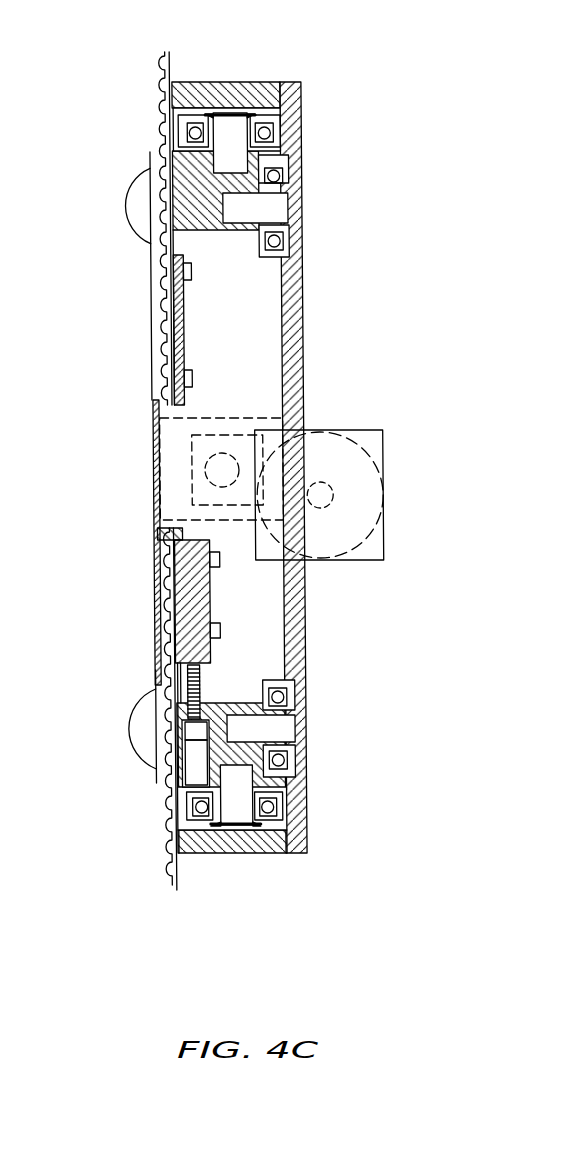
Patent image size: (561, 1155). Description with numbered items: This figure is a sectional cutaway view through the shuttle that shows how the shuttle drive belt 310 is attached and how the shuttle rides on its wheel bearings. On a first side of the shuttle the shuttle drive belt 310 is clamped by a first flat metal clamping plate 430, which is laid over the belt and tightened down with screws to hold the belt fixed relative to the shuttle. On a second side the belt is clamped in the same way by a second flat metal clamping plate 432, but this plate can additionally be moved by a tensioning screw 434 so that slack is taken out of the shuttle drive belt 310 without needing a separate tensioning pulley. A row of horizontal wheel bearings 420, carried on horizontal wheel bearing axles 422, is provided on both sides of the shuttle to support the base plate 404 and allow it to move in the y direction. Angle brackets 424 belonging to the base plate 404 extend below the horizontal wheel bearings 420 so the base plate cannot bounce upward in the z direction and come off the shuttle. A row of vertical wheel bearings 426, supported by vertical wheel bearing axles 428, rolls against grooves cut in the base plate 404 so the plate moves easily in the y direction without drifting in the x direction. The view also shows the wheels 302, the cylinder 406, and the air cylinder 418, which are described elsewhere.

The wheels 302 is at (107, 467).
The shuttle drive belt 310 is at (131, 488).
The base plate 404 is at (288, 467).
The cylinder 406 is at (329, 522).
The air cylinder 418 is at (183, 469).
The horizontal wheel bearings 420 is at (276, 468).
The horizontal wheel bearing axles 422 is at (254, 472).
The angle brackets 424 is at (229, 477).
The vertical wheel bearings 426 is at (320, 478).
The vertical wheel bearing axles 428 is at (277, 470).
The first flat metal clamping plate 430 is at (216, 330).
The second flat metal clamping plate 432 is at (219, 595).
The tensioning screw 434 is at (154, 744).